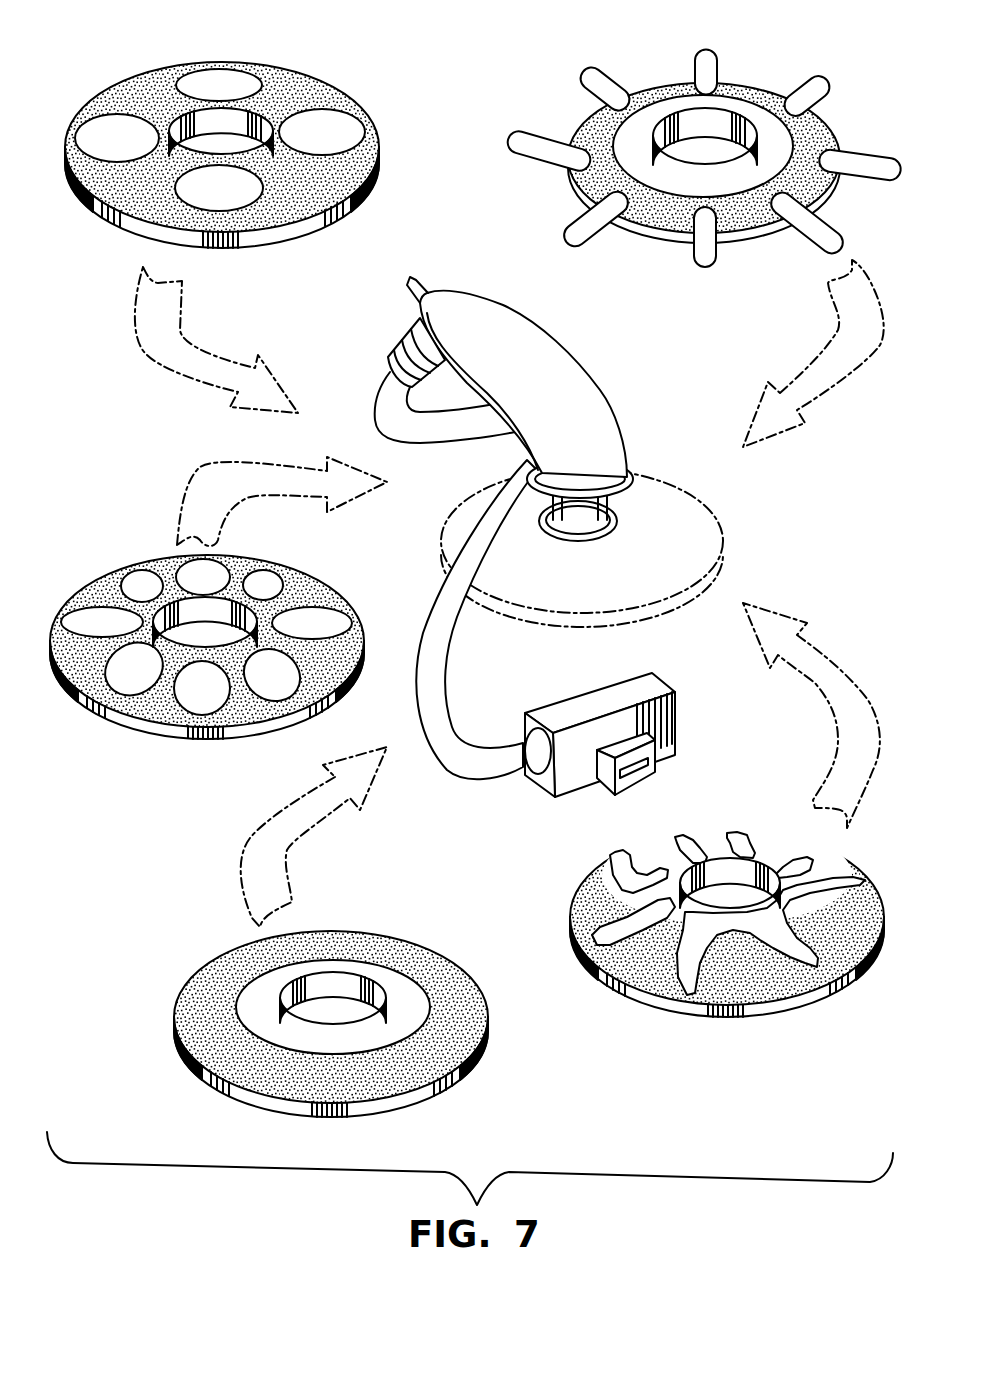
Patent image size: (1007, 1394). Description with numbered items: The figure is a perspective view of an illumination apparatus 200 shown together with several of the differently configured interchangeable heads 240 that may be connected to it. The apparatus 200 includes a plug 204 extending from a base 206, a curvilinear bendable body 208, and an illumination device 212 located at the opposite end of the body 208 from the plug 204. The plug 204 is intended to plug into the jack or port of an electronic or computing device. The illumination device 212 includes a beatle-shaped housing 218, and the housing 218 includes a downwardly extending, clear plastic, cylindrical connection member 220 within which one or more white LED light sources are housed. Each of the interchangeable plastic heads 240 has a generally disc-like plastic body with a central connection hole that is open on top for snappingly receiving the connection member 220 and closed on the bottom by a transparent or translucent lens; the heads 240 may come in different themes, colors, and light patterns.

The illumination apparatus 200 is at (567, 532).
The plug 204 is at (652, 768).
The base 206 is at (677, 697).
The curvilinear bendable body 208 is at (457, 760).
The illumination device 212 is at (507, 358).
The housing 218 is at (466, 288).
The connection member 220 is at (613, 518).
The interchangeable plastic heads 240 is at (282, 58).